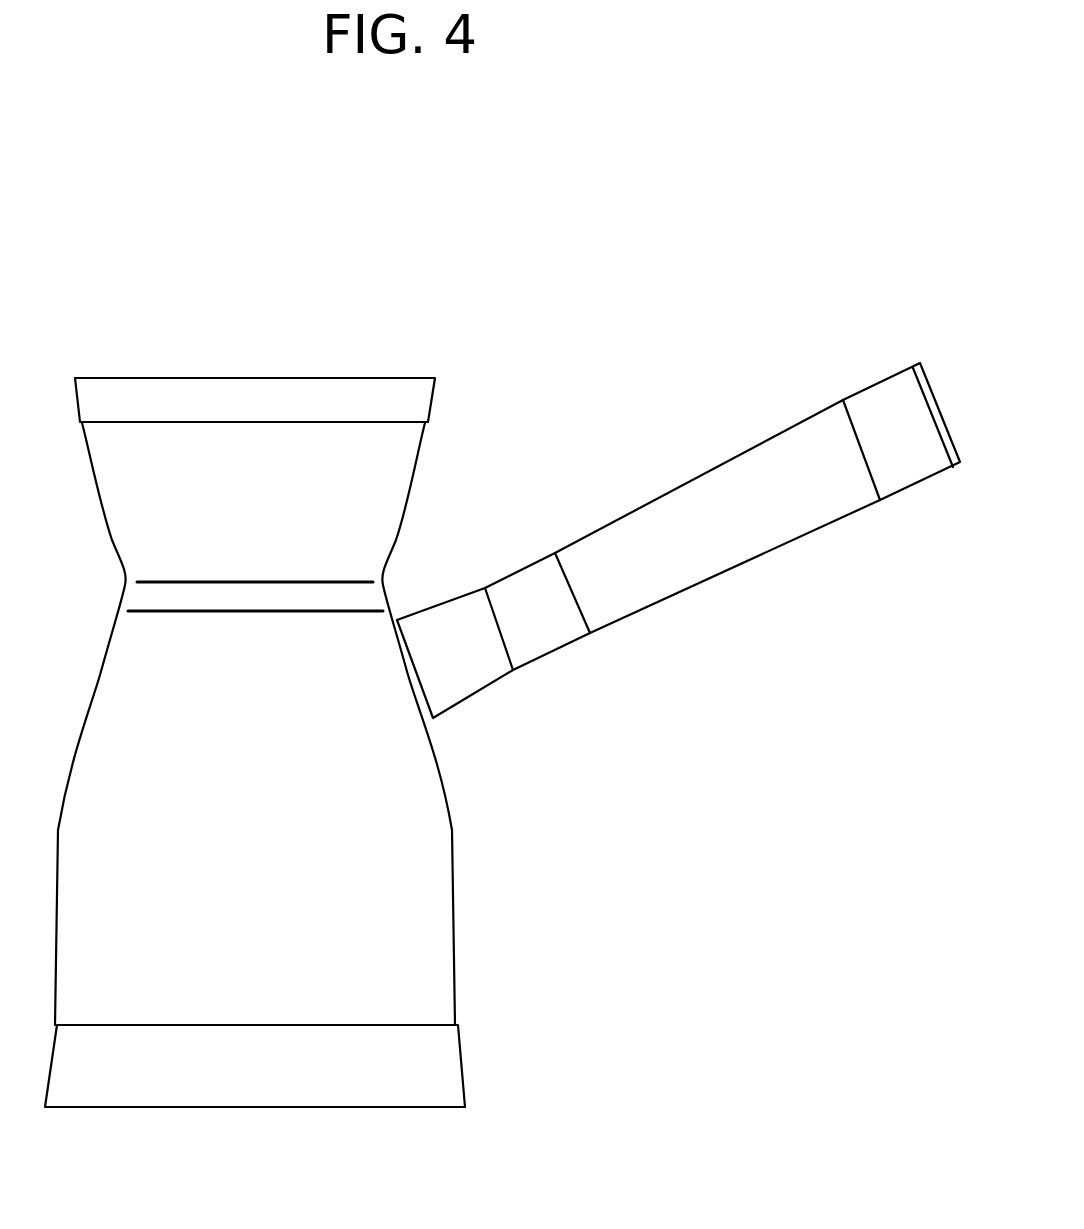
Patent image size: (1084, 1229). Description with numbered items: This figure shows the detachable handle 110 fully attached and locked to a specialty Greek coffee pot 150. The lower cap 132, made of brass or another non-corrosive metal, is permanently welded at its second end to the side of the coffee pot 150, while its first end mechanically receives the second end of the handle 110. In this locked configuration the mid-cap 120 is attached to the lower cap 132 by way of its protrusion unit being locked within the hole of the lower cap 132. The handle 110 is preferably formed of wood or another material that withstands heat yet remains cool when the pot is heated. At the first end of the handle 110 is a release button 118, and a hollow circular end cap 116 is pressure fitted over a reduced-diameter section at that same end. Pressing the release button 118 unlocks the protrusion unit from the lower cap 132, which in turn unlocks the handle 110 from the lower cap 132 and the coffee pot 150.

The coffee pot 150 is at (230, 351).
The detachable handle 110 is at (678, 547).
The lower cap 132 is at (479, 711).
The mid-cap 120 is at (568, 663).
The circular end cap 116 is at (898, 516).
The release button 118 is at (901, 347).